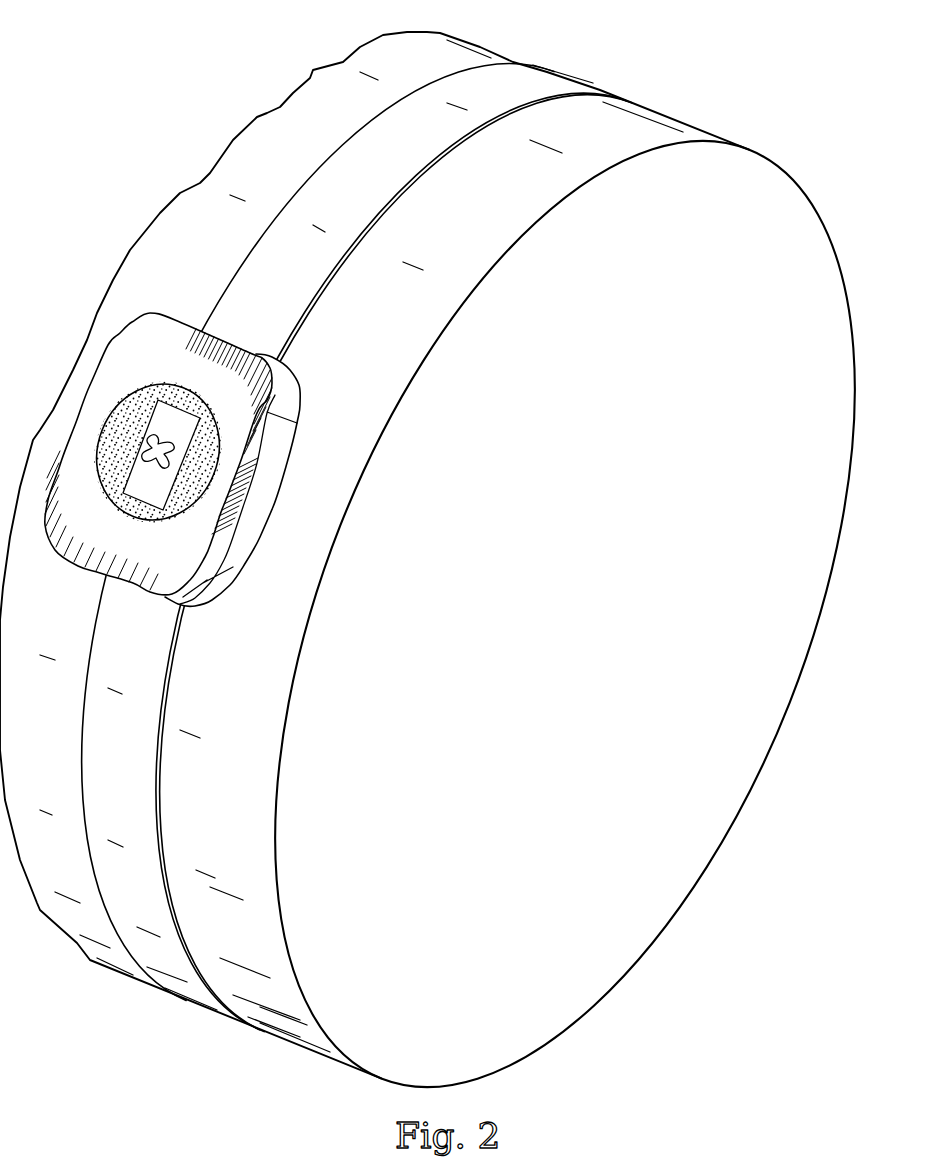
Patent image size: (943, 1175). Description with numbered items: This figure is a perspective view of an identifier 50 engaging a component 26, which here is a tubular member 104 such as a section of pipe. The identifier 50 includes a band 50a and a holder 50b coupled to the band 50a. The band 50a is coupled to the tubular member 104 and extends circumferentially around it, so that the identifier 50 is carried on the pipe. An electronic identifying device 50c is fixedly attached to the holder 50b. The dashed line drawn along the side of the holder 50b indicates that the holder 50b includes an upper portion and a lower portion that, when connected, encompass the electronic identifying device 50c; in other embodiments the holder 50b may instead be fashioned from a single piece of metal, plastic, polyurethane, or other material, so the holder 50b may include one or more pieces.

The component 26 is at (193, 182).
The tubular member 104 is at (331, 78).
The identifier 50 is at (165, 452).
The band 50a is at (331, 173).
The holder 50b is at (138, 576).
The electronic identifying device 50c is at (148, 442).